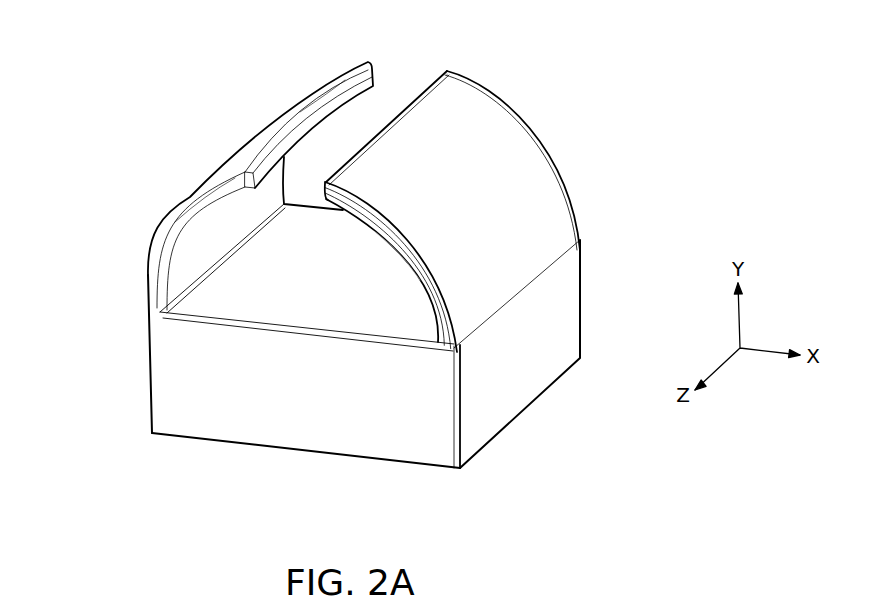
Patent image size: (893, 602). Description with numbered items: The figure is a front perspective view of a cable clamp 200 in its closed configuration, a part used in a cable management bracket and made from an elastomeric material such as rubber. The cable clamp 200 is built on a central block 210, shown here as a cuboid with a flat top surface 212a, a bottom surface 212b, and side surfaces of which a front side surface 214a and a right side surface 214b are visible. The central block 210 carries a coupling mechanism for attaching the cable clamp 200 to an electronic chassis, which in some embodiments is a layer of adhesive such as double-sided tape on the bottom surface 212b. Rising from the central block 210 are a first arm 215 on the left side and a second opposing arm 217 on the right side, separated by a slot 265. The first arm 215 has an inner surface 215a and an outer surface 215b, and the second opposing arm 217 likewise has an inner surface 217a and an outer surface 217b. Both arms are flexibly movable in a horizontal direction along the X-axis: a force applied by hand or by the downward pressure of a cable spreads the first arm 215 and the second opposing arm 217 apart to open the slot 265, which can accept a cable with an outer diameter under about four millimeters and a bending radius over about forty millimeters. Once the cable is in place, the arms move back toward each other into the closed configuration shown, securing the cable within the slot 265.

The cable clamp 200 is at (173, 118).
The central block 210 is at (142, 415).
The top surface 212a is at (346, 283).
The bottom surface 212b is at (313, 462).
The side surface 214a is at (364, 403).
The side surface 214b is at (549, 363).
The first arm 215 is at (153, 249).
The inner surface 215a is at (221, 222).
The outer surface 215b is at (312, 103).
The second opposing arm 217 is at (567, 158).
The inner surface 217a is at (410, 267).
The outer surface 217b is at (496, 183).
The slot 265 is at (400, 77).